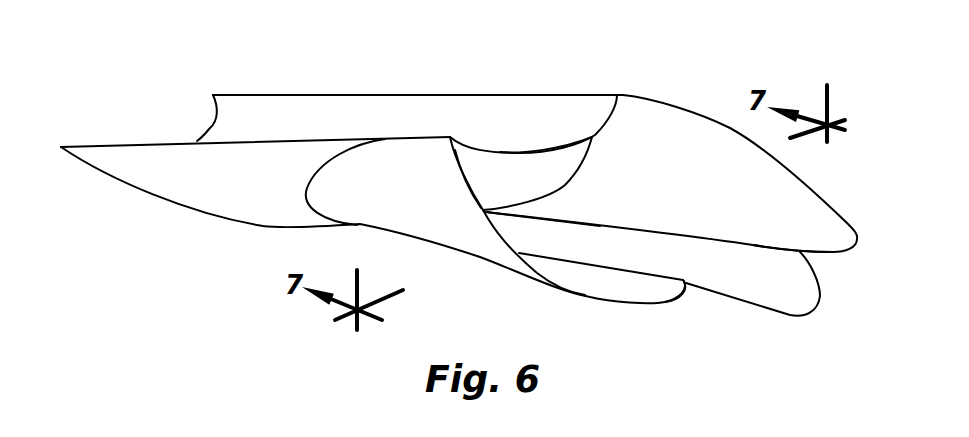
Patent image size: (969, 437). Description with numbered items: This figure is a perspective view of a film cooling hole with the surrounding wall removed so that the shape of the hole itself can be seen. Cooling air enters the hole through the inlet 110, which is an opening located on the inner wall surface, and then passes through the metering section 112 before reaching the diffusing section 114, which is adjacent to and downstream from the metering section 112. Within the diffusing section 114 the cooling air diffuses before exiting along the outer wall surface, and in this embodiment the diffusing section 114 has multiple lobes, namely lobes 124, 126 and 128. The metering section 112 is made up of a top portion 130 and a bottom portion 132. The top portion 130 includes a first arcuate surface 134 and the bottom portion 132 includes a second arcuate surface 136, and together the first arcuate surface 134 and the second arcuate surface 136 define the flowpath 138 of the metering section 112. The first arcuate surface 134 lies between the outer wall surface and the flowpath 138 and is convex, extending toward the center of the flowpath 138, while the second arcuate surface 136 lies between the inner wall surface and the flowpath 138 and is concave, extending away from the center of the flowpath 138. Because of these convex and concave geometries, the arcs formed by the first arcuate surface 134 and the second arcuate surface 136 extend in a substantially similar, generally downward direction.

The inlet 110 is at (86, 168).
The metering section 112 is at (468, 150).
The diffusing section 114 is at (695, 154).
The lobe 124 is at (822, 232).
The lobe 126 is at (784, 299).
The lobe 128 is at (664, 299).
The top portion 130 is at (497, 148).
The bottom portion 132 is at (510, 216).
The first arcuate surface 134 is at (556, 158).
The second arcuate surface 136 is at (539, 192).
The flowpath 138 is at (513, 187).